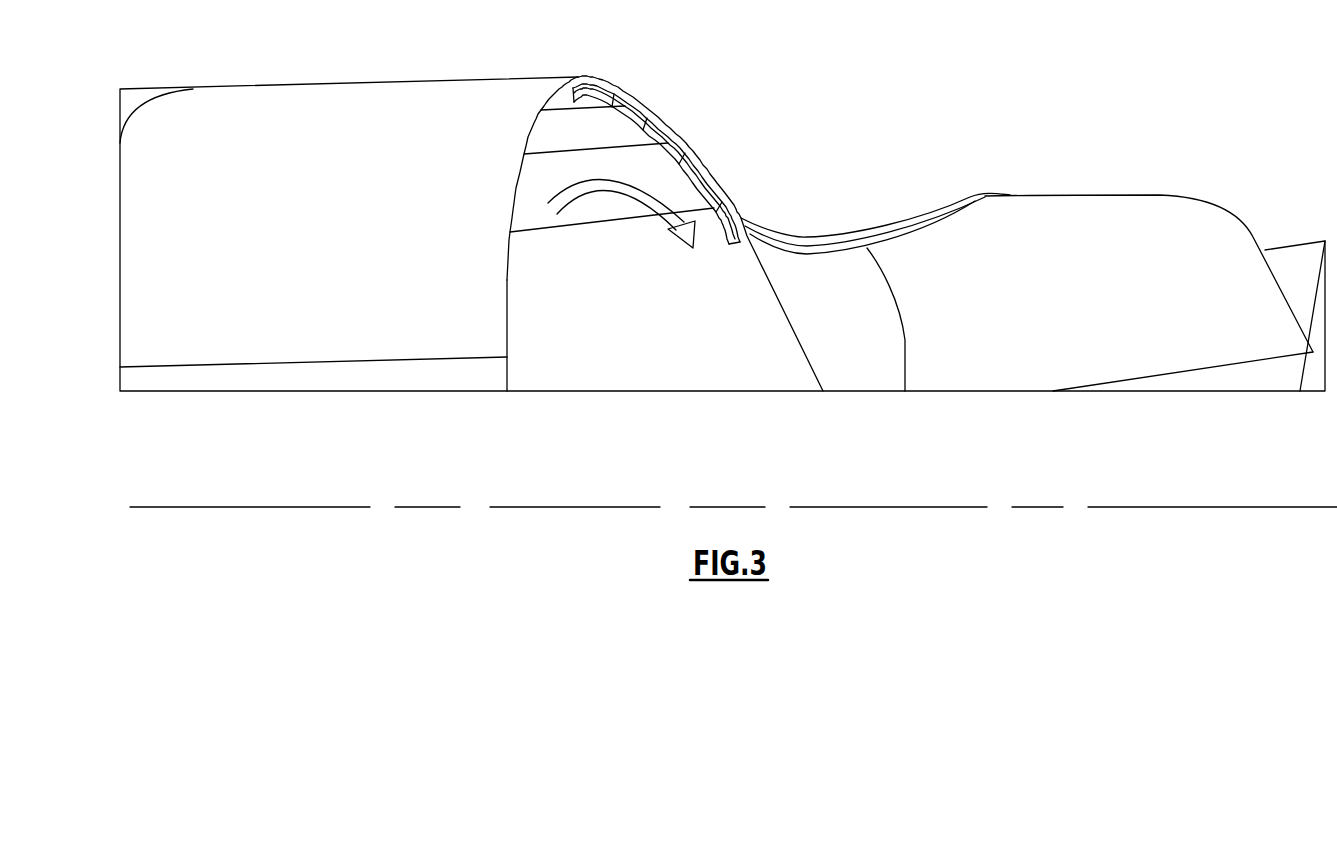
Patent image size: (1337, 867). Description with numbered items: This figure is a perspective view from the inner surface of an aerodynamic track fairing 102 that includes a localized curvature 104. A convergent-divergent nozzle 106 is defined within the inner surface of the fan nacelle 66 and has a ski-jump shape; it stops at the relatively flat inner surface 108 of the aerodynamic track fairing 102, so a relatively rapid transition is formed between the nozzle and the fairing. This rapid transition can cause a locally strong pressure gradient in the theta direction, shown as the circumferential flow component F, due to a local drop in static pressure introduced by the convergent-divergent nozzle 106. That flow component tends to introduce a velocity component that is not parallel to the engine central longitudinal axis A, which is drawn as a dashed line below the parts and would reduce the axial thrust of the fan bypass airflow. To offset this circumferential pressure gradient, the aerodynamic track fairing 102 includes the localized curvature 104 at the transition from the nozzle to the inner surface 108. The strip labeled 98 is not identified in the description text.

The fan nacelle 66 is at (565, 65).
The abradable strip 98 is at (611, 81).
The convergent-divergent nozzle 106 is at (658, 111).
The circumferential flow component F is at (657, 190).
The localized curvature 104 is at (803, 240).
The aerodynamic track fairing 102 is at (871, 203).
The inner surface 108 is at (905, 391).
The engine central longitudinal axis A is at (1263, 507).